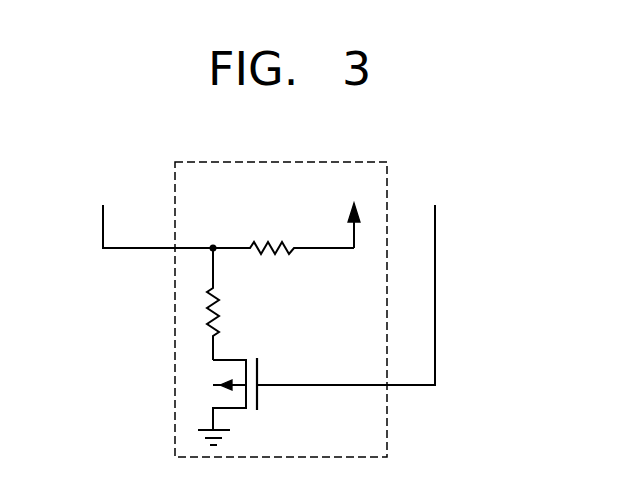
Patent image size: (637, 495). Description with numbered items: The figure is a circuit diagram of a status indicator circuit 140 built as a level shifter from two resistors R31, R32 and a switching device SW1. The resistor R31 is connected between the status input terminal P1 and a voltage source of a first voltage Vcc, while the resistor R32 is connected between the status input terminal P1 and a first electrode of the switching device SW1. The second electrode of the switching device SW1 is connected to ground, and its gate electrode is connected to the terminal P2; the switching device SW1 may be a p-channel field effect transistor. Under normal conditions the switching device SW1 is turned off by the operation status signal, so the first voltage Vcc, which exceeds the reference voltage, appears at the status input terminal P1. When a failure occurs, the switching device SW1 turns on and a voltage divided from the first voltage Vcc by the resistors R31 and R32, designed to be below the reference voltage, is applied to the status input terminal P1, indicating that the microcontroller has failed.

The status indicator circuit 140 is at (283, 162).
The status input terminal P1 is at (152, 213).
The terminal P2 is at (352, 281).
The first voltage Vcc is at (354, 213).
The resistor R31 is at (282, 234).
The resistor R32 is at (238, 304).
The switching device SW1 is at (255, 399).